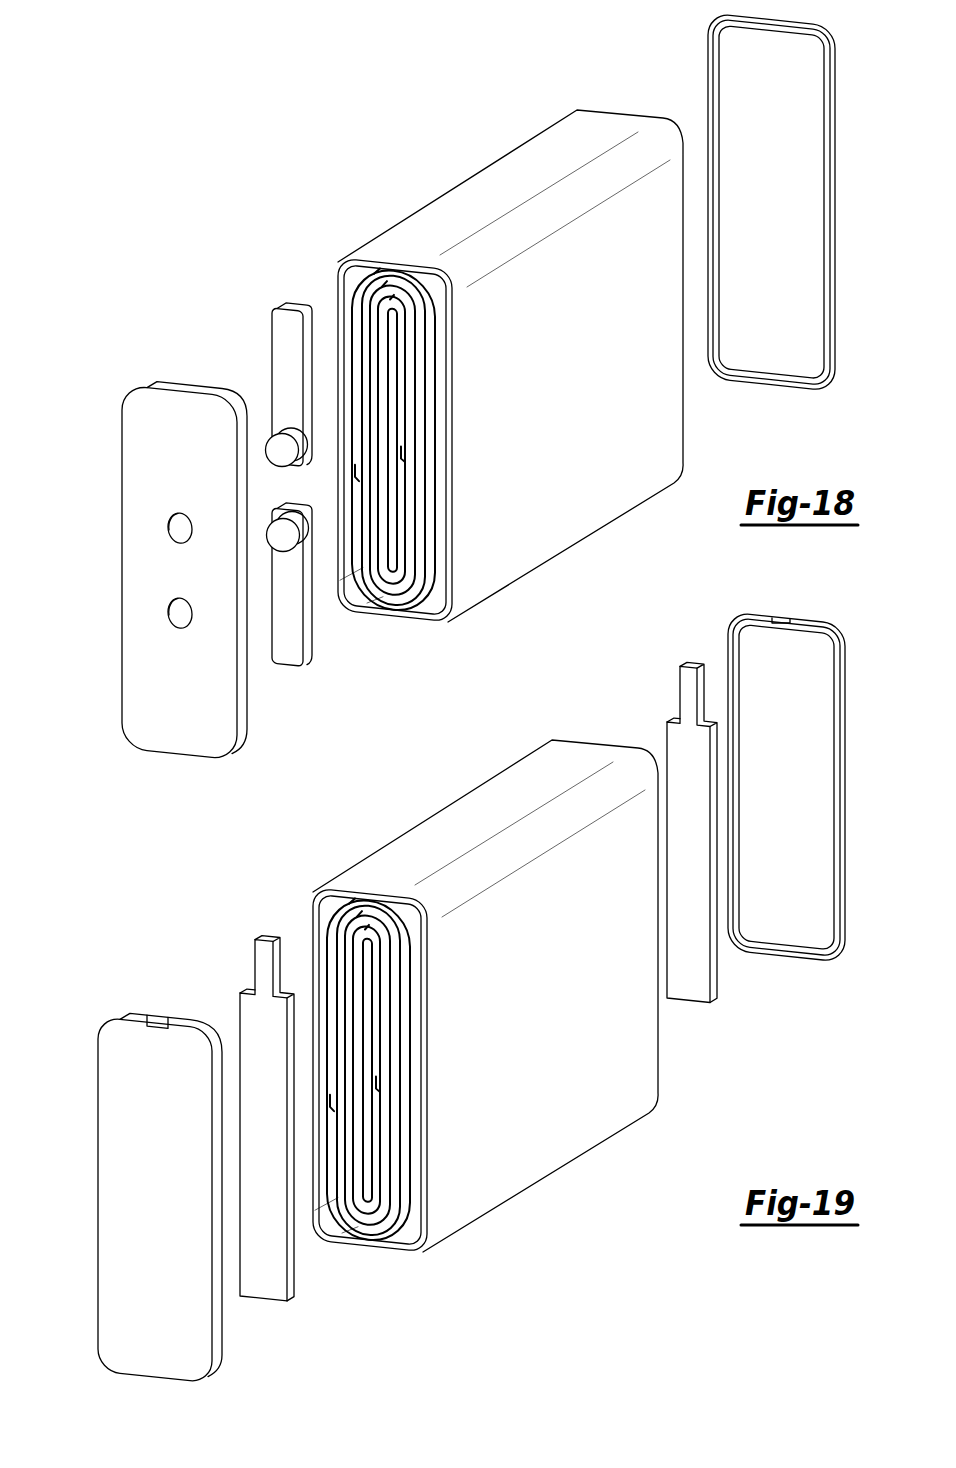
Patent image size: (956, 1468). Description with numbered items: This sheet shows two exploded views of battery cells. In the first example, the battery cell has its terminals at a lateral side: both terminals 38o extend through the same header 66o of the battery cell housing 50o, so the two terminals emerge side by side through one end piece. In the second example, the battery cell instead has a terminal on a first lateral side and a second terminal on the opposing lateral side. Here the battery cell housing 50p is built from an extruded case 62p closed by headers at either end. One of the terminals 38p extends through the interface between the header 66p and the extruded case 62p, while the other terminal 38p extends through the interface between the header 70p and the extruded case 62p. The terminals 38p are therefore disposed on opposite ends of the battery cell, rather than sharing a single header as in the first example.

In FIG. 18, the battery cell housing 50o is at (868, 134).
In FIG. 18, the terminals 38o is at (290, 344).
In FIG. 18, the header 66o is at (150, 690).
In FIG. 19, the extruded case 62p is at (573, 1120).
In FIG. 19, the battery cell housing 50p is at (870, 725).
In FIG. 19, the header 70p is at (795, 930).
In FIG. 19, the terminals 38p is at (265, 957).
In FIG. 19, the header 66p is at (127, 1330).